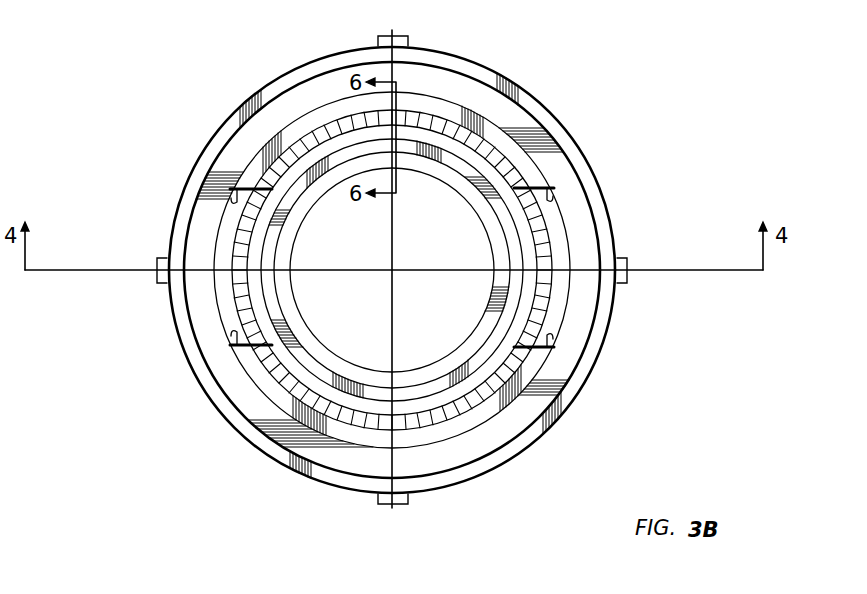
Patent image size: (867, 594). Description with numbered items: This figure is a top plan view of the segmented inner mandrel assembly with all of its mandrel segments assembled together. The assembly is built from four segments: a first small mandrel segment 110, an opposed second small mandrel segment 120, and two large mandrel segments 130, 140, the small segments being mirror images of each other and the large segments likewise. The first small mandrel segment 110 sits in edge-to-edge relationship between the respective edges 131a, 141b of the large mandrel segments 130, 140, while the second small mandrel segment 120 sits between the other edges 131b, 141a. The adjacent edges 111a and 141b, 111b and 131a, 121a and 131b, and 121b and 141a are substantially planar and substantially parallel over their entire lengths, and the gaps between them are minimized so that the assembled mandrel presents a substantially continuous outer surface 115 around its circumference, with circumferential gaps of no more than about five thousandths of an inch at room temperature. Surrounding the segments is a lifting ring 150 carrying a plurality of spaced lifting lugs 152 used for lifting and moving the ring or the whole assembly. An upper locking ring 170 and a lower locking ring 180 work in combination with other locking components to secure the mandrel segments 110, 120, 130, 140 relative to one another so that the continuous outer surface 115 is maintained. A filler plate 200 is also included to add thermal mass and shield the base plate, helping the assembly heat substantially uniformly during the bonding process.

The first small mandrel segment 110 is at (563, 245).
The edge of first small mandrel segment 111a is at (548, 335).
The edge of first small mandrel segment 111b is at (553, 203).
The outer surface 115 is at (502, 132).
The second small mandrel segment 120 is at (250, 188).
The edge of second small mandrel segment 121a is at (236, 203).
The edge of second small mandrel segment 121b is at (235, 338).
The large mandrel segment 130 is at (447, 112).
The edge of large mandrel segment 131a is at (540, 180).
The edge of large mandrel segment 131b is at (244, 172).
The large mandrel segment 140 is at (283, 410).
The edge of large mandrel segment 141a is at (247, 350).
The edge of large mandrel segment 141b is at (543, 347).
The lifting ring 150 is at (567, 125).
The lifting lugs 152 is at (380, 41).
The upper locking ring 170 is at (460, 397).
The lower locking ring 180 is at (490, 223).
The filler plate 200 is at (590, 323).